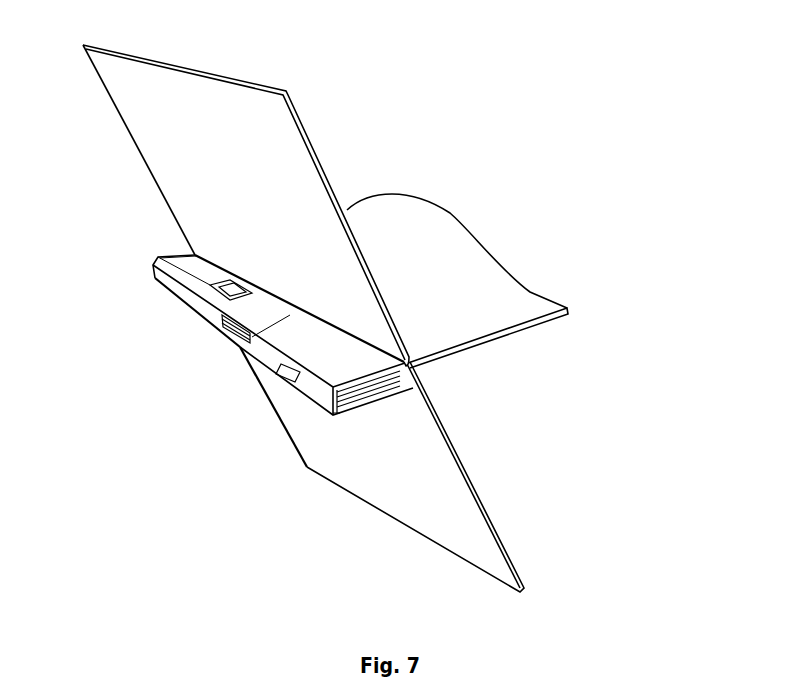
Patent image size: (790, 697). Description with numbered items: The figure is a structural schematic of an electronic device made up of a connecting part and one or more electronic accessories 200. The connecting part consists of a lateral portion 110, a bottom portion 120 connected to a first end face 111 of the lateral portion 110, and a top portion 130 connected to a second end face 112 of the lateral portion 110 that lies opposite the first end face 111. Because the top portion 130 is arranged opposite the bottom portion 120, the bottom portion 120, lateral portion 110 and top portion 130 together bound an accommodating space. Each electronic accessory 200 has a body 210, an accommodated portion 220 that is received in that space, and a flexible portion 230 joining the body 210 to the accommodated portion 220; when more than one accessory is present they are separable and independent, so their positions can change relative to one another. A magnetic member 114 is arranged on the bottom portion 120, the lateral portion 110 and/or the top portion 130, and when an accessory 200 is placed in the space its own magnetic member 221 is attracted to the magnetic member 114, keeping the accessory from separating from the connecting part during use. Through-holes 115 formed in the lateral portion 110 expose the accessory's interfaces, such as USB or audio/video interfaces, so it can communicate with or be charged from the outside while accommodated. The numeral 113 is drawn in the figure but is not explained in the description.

The lateral portion 110 is at (188, 300).
The first end face 111 is at (337, 413).
The second end face 112 is at (328, 406).
The button 113 is at (280, 367).
The magnetic member 114 is at (172, 257).
The through-holes 115 is at (217, 330).
The bottom portion 120 is at (370, 403).
The top portion 130 is at (243, 347).
The electronic accessory 200 is at (278, 187).
The body 210 is at (503, 543).
The accommodated portion 220 is at (447, 428).
The magnetic member 221 is at (227, 283).
The flexible portion 230 is at (407, 373).